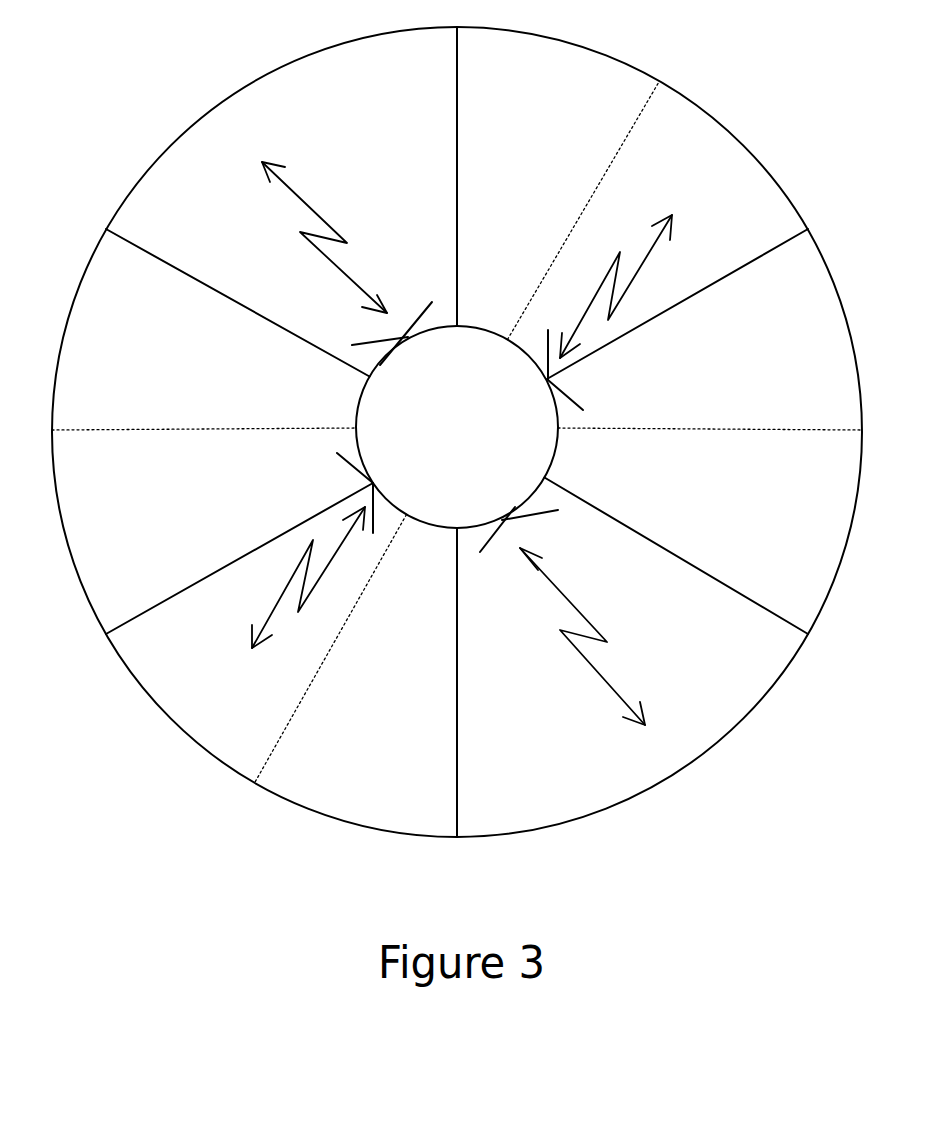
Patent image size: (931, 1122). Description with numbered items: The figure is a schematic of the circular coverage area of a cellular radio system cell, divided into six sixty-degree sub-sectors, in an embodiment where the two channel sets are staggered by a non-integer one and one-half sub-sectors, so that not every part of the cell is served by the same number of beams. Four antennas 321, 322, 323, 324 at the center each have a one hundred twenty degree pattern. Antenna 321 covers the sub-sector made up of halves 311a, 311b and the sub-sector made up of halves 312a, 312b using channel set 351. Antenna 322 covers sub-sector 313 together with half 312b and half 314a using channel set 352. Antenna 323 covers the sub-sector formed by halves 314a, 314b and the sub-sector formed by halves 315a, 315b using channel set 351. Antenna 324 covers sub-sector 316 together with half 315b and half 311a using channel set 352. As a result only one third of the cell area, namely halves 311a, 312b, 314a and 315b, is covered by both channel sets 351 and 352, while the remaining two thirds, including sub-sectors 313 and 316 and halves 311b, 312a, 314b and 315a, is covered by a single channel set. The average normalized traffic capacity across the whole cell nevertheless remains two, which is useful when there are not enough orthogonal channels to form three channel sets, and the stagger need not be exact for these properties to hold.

The half of sub-sector 311 311a is at (530, 176).
The half of sub-sector 311 311b is at (631, 210).
The half of sub-sector 312 312a is at (700, 324).
The half of sub-sector 312 312b is at (710, 453).
The sub-sector 313 is at (677, 630).
The half of sub-sector 314 314a is at (377, 682).
The half of sub-sector 314 314b is at (296, 649).
The half of sub-sector 315 315a is at (229, 544).
The half of sub-sector 315 315b is at (204, 411).
The sub-sector 316 is at (238, 247).
The antenna 321 is at (541, 370).
The antenna 322 is at (514, 517).
The antenna 323 is at (388, 493).
The antenna 324 is at (397, 344).
The channel set 351 is at (644, 289).
The channel set 352 is at (289, 206).